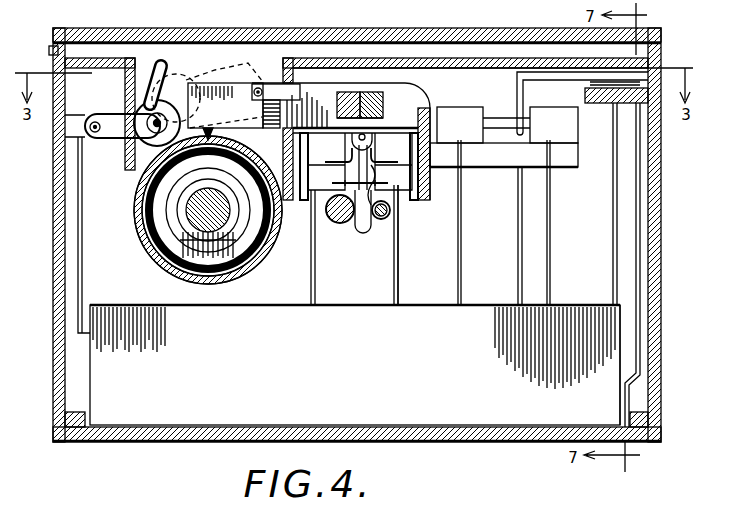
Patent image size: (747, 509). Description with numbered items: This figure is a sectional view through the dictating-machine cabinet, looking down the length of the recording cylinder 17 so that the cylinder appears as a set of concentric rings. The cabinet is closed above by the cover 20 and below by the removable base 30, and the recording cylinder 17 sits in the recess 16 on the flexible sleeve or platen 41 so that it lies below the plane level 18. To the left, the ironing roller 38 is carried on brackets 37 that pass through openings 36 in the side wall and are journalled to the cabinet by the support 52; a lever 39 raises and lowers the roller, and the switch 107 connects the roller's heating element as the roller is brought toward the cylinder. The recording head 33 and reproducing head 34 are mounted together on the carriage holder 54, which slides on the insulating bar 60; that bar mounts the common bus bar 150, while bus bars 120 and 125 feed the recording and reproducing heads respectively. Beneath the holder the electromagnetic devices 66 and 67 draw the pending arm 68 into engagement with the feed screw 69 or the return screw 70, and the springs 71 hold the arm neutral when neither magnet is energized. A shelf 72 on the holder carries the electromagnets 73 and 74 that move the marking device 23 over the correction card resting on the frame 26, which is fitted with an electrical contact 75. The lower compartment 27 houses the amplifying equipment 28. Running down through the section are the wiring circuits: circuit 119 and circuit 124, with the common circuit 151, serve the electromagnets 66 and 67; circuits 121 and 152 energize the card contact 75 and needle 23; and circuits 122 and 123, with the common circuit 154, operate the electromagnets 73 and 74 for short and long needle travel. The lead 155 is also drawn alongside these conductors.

The recess 16 is at (150, 186).
The recording cylinder 17 is at (170, 200).
The plane level 18 is at (49, 50).
The cover 20 is at (62, 30).
The marking device 23 is at (517, 86).
The frame 26 is at (645, 105).
The compartment 27 is at (592, 353).
The amplifying equipment 28 is at (355, 365).
The base 30 is at (150, 440).
The recording head 33 is at (254, 80).
The reproducing head 34 is at (216, 70).
The openings 36 is at (133, 143).
The brackets 37 is at (150, 115).
The ironing roller 38 is at (135, 180).
The lever 39 is at (160, 64).
The flexible sleeve 41 is at (160, 215).
The support 52 is at (75, 122).
The carriage holder 54 is at (420, 118).
The bar 60 is at (384, 108).
The electromagnetic device 66 is at (380, 175).
The electromagnetic device 67 is at (349, 175).
The pending arm 68 is at (360, 238).
The feed screw 69 is at (381, 220).
The return screw 70 is at (334, 223).
The springs 71 is at (350, 153).
The shelf 72 is at (504, 155).
The electromagnet 73 is at (460, 125).
The electromagnet 74 is at (530, 125).
The electrical contact 75 is at (614, 110).
The switch 107 is at (78, 270).
The circuit 119 is at (398, 268).
The bus bar 120 is at (382, 100).
The circuit 121 is at (613, 247).
The circuit 122 is at (462, 238).
The circuit 123 is at (549, 200).
The circuit 124 is at (312, 281).
The bus bar 125 is at (340, 106).
The common bus bar 150 is at (358, 93).
The circuit 151 is at (315, 297).
The circuit 152 is at (478, 210).
The circuit 154 is at (462, 253).
The lead wire 155 is at (82, 287).